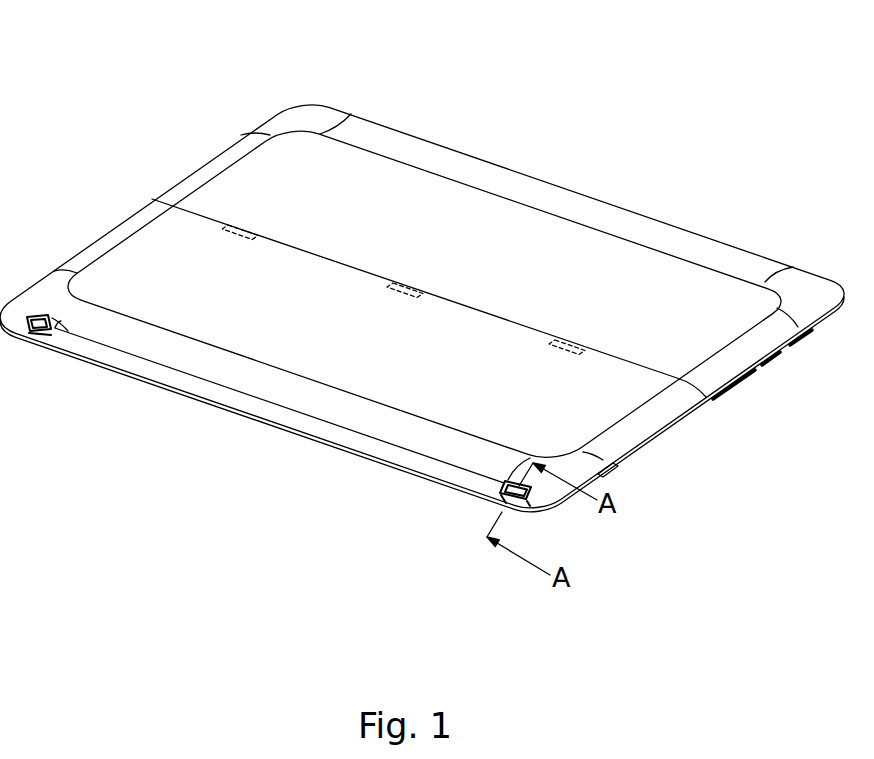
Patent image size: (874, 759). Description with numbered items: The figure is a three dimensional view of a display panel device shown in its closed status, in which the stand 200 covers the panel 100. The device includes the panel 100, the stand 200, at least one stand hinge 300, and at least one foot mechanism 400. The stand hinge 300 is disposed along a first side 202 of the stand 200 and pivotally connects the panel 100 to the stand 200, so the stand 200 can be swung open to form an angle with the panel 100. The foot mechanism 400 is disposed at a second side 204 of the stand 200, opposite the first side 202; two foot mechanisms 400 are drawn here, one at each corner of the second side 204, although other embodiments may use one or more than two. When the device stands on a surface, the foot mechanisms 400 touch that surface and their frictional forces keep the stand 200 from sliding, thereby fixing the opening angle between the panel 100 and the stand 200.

The panel 100 is at (723, 257).
The stand 200 is at (160, 252).
The first side 202 is at (213, 208).
The second side 204 is at (268, 429).
The stand hinge 300 is at (569, 340).
The foot mechanism 400 is at (38, 334).